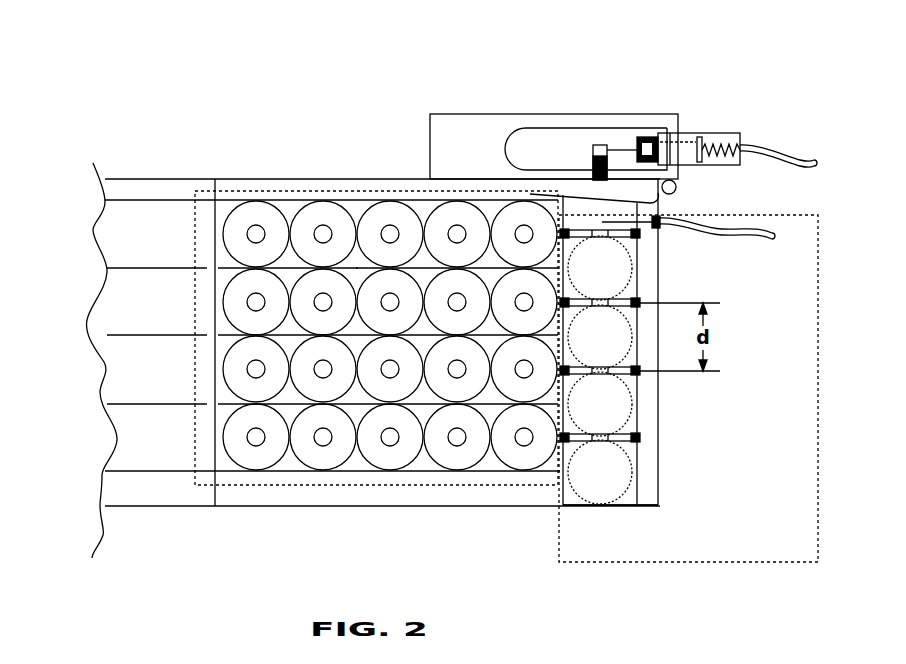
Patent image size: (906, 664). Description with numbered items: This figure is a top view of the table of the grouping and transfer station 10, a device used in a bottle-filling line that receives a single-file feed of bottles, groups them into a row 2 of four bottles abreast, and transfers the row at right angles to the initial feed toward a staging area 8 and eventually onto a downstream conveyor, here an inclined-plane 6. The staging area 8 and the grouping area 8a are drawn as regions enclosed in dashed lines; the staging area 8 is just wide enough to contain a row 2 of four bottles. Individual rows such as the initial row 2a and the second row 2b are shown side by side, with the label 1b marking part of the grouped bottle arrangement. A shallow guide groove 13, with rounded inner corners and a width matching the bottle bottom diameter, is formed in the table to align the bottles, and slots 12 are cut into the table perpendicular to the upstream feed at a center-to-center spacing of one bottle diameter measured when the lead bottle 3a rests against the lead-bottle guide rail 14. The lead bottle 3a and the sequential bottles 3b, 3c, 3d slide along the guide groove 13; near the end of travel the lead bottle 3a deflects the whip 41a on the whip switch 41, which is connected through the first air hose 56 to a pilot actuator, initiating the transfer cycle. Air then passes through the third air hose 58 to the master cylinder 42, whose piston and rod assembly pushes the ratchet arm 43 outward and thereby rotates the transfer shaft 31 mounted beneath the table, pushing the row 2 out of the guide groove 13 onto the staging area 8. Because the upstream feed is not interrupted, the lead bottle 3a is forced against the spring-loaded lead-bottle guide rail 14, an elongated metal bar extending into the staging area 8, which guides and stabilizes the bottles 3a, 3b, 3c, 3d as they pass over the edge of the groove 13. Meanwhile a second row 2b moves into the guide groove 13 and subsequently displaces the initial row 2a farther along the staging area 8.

The grouping and transfer station 10 is at (637, 78).
The inclined-plane 6 is at (132, 243).
The staging area 8 is at (225, 207).
The row 2 is at (388, 260).
The initial row 2a is at (257, 200).
The second row 2b is at (333, 200).
The article row 1b is at (362, 265).
The transfer shaft 31 is at (570, 166).
The ratchet arm 43 is at (602, 150).
The master cylinder 42 is at (700, 133).
The third air hose 58 is at (772, 147).
The grouping area 8a is at (798, 333).
The whip switch 41 is at (660, 228).
The whip 41a is at (660, 233).
The lead-bottle guide rail 14 is at (660, 213).
The first air hose 56 is at (750, 232).
The lead bottle 3a is at (600, 268).
The sequential bottle 3b is at (600, 337).
The sequential bottle 3c is at (600, 404).
The sequential bottle 3d is at (600, 472).
The slot 12 is at (640, 437).
The guide groove 13 is at (628, 493).